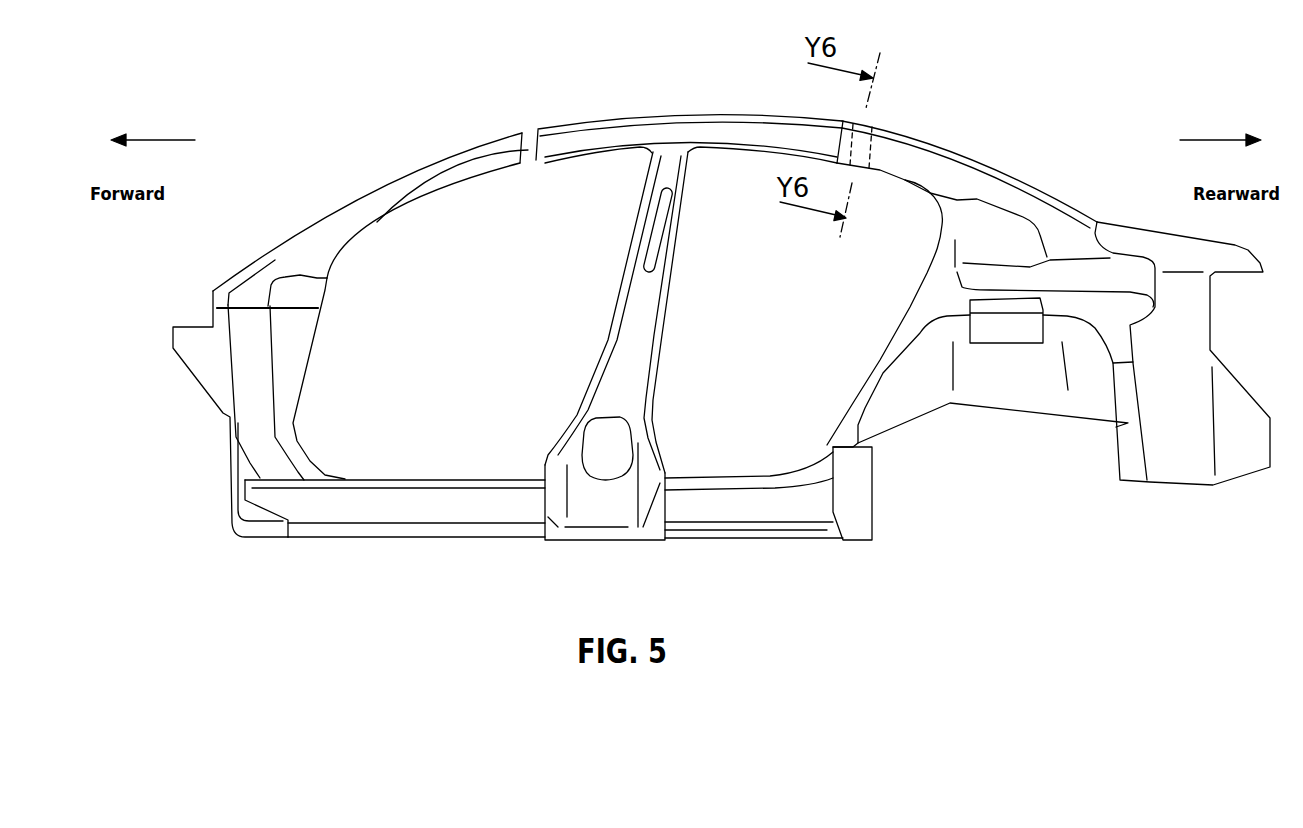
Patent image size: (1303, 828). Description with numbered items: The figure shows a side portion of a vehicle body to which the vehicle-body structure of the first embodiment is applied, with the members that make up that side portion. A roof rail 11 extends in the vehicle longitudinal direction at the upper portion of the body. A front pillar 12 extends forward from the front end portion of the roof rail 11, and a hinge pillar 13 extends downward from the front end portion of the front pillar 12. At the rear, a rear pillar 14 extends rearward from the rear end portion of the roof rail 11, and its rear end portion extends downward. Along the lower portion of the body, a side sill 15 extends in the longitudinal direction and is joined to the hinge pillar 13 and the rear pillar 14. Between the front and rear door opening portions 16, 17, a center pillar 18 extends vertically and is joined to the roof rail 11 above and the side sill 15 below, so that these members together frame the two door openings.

The roof rail 11 is at (678, 112).
The front pillar 12 is at (398, 181).
The hinge pillar 13 is at (306, 370).
The rear pillar 14 is at (940, 144).
The side sill 15 is at (432, 540).
The front door opening portion 16 is at (513, 324).
The rear door opening portion 17 is at (776, 324).
The center pillar 18 is at (657, 388).